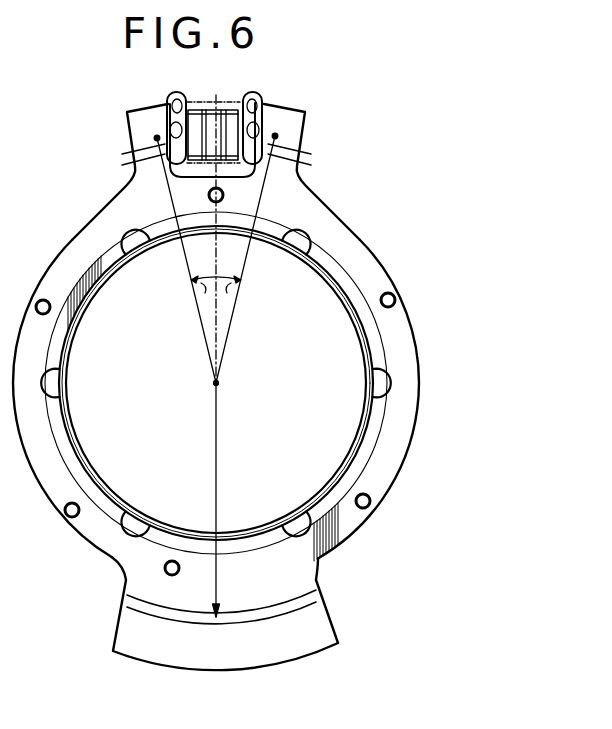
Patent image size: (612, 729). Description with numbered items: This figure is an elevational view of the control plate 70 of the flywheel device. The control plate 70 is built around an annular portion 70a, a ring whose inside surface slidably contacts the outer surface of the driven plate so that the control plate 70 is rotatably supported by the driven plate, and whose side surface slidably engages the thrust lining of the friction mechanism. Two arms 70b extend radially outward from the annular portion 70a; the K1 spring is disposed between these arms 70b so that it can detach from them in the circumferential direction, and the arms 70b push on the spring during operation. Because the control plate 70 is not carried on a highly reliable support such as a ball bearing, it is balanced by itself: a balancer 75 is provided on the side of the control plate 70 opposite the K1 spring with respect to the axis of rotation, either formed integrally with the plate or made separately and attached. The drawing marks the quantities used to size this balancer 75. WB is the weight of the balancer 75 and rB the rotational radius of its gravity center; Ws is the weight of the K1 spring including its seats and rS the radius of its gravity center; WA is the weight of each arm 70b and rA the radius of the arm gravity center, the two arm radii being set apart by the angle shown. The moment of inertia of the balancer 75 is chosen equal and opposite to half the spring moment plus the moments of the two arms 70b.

The control plate 70 is at (399, 325).
The annular portion 70a is at (347, 243).
The arms 70b is at (147, 115).
The balancer 75 is at (306, 613).
The weight of each arm WA is at (133, 147).
The weight of K1 spring Ws is at (217, 110).
The weight of balancer WB is at (220, 620).
The rotational radius of arm gravity center rA is at (189, 268).
The rotational radius of spring gravity center rS is at (215, 261).
The rotational radius of balancer gravity center rB is at (220, 442).